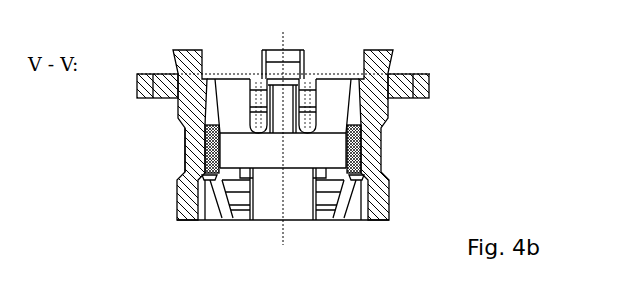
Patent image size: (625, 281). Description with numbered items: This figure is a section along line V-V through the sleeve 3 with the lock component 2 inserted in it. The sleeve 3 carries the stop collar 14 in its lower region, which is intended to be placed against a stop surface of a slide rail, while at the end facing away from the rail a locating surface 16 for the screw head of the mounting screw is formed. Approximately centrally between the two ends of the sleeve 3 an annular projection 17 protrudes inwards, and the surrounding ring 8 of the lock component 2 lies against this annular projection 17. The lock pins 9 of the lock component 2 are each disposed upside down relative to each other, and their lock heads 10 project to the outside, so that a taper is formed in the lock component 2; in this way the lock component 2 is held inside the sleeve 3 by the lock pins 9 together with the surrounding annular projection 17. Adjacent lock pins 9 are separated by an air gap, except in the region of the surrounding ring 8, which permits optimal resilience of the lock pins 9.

The lock component 2 is at (302, 214).
The sleeve 3 is at (382, 188).
The surrounding ring 8 is at (362, 148).
The lock pins 9 is at (213, 222).
The lock heads 10 is at (209, 78).
The stop collar 14 is at (425, 73).
The locating surface 16 is at (383, 222).
The annular projection 17 is at (185, 150).